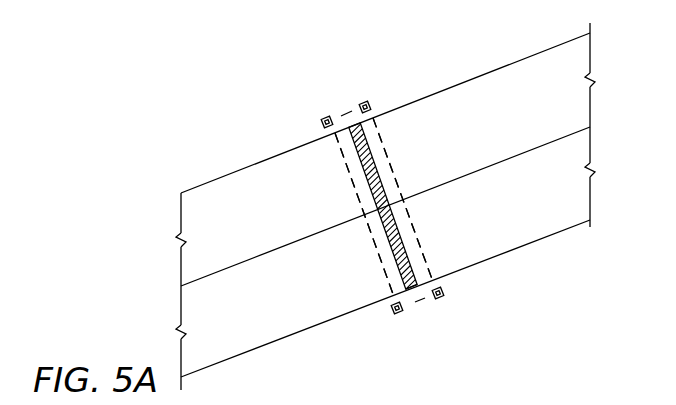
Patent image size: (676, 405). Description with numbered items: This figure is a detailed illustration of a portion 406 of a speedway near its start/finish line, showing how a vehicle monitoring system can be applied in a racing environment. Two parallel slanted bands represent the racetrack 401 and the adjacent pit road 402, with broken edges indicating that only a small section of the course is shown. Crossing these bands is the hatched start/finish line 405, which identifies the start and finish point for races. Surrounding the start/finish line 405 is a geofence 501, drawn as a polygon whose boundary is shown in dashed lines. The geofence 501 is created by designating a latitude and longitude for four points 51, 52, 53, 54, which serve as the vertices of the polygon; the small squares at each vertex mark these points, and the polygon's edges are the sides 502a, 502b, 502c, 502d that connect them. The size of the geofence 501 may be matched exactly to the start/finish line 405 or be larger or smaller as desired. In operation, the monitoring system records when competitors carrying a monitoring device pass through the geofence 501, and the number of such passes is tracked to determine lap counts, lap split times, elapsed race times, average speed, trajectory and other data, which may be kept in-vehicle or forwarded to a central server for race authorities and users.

The portion of speedway 406 is at (213, 114).
The racetrack 401 is at (533, 125).
The pit road 402 is at (565, 206).
The start/finish line 405 is at (374, 170).
The geofence 501 is at (350, 198).
The side of geofence polygon 502a is at (417, 233).
The side of geofence polygon 502b is at (346, 113).
The side of geofence polygon 502c is at (376, 250).
The side of geofence polygon 502d is at (425, 302).
The vertex point 51 is at (371, 103).
The vertex point 52 is at (318, 121).
The vertex point 53 is at (394, 313).
The vertex point 54 is at (444, 293).